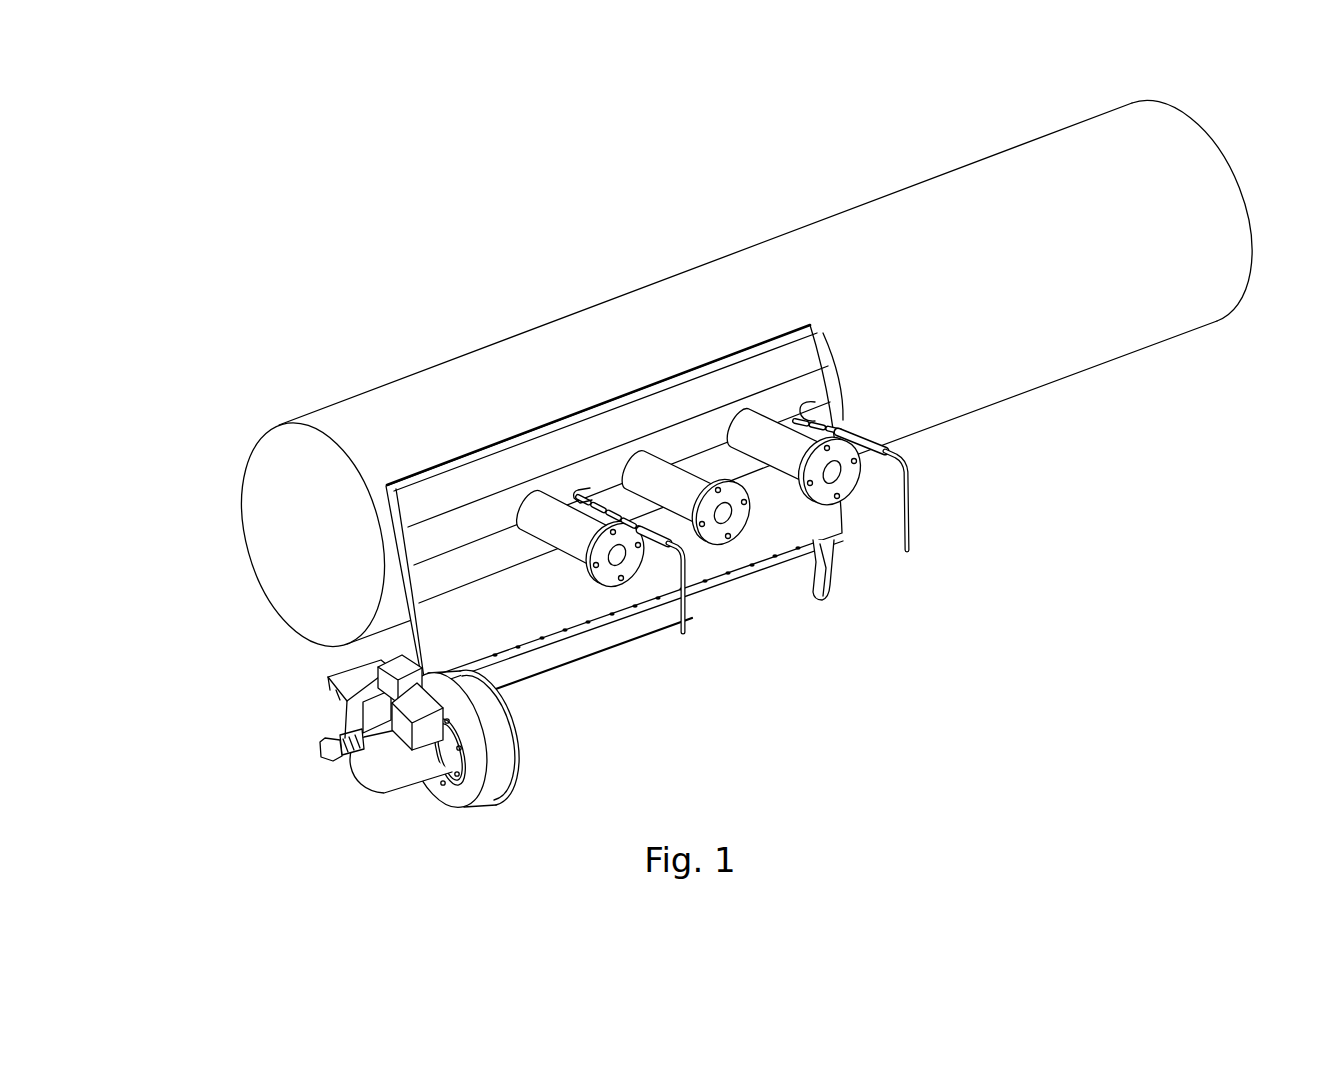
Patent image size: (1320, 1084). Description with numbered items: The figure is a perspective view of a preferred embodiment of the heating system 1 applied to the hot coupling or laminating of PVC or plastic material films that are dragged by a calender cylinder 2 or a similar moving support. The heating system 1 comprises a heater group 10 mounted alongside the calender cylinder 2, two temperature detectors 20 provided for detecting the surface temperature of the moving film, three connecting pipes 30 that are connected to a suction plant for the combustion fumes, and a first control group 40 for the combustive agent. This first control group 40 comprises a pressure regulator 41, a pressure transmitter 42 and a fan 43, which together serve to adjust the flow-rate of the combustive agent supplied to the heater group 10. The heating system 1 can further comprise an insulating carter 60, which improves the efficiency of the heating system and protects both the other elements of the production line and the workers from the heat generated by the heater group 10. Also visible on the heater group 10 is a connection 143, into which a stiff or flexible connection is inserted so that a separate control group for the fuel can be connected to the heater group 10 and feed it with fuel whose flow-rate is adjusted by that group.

The heating system 1 is at (600, 553).
The calender cylinder 2 is at (283, 487).
The heater group 10 is at (561, 538).
The temperature detectors 20 is at (656, 538).
The connecting pipes 30 is at (513, 520).
The first control group for the combustive agent 40 is at (387, 775).
The pressure regulator 41 is at (381, 653).
The pressure transmitter 42 is at (322, 743).
The fan 43 is at (465, 762).
The insulating carter 60 is at (543, 603).
The connection 143 is at (834, 581).